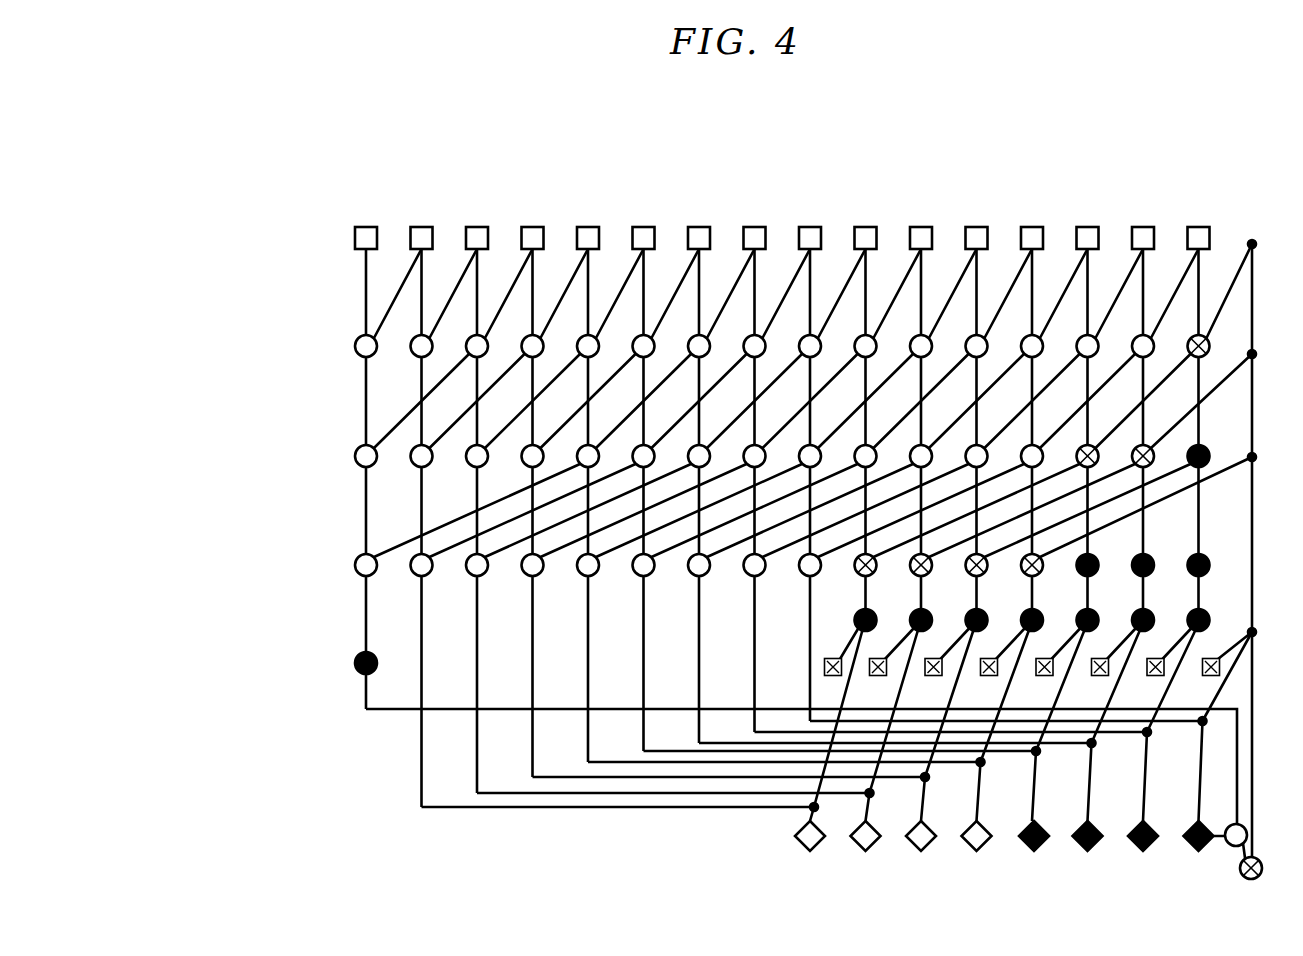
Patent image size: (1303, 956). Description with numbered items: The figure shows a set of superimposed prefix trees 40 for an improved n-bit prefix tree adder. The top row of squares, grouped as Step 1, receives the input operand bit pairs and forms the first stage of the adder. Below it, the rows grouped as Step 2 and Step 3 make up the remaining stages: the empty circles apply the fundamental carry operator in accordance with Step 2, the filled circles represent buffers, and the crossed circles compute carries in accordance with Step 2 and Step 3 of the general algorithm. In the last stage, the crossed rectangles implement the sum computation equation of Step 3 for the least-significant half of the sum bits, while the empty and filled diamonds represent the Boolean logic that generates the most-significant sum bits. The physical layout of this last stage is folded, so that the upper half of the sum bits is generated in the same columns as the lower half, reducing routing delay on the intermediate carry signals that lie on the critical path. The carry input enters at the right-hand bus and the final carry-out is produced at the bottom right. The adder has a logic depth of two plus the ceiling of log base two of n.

The set of superimposed prefix trees 40 is at (346, 131).
The Step 1 is at (313, 200).
The Step 2 is at (314, 865).
The Step 3 is at (733, 734).